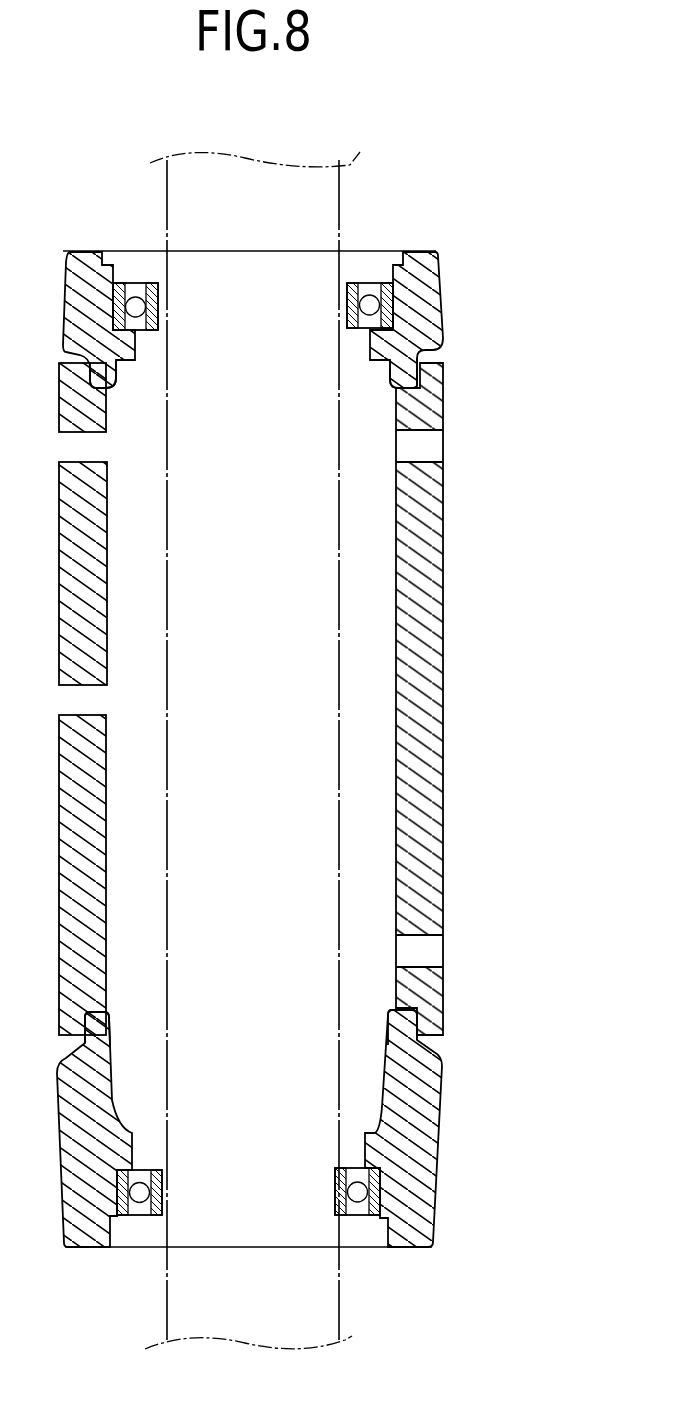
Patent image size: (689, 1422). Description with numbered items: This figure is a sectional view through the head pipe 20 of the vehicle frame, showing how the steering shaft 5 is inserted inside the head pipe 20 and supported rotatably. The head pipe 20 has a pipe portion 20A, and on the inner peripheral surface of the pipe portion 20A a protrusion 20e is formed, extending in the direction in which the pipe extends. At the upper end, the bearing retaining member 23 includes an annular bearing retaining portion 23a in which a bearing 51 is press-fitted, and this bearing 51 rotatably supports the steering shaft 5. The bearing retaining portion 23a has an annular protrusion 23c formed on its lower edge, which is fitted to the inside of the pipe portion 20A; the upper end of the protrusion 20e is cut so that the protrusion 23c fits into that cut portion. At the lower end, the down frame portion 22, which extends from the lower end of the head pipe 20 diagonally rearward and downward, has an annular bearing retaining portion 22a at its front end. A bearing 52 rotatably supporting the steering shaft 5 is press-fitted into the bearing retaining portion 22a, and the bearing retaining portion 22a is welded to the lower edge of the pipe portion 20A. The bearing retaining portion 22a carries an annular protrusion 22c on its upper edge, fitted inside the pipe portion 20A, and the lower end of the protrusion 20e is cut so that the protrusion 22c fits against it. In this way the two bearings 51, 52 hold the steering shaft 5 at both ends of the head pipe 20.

The steering shaft 5 is at (338, 563).
The head pipe 20 is at (313, 699).
The pipe portion 20A is at (444, 708).
The protrusion 20e is at (407, 778).
The down frame portion 22 is at (305, 1128).
The bearing retaining portion 22a is at (440, 1130).
The annular protrusion 22c is at (400, 1022).
The bearing retaining member 23 is at (307, 319).
The bearing retaining portion 23a is at (440, 297).
The annular protrusion 23c is at (405, 373).
The bearing 51 is at (138, 283).
The bearing 52 is at (140, 1215).